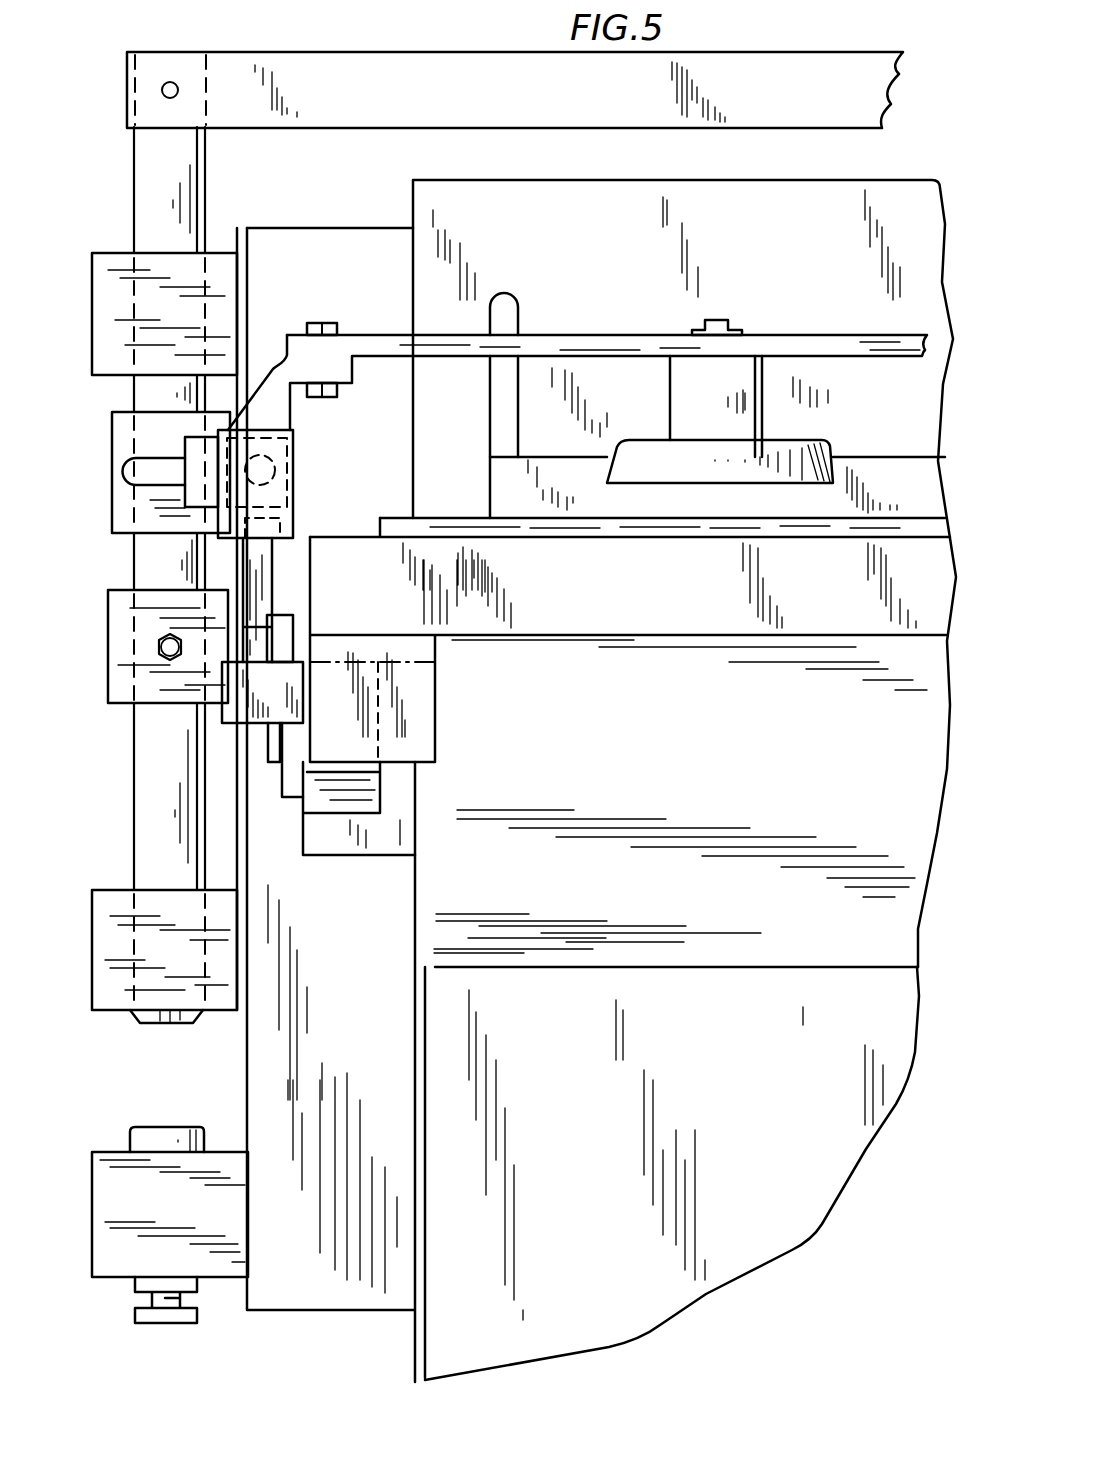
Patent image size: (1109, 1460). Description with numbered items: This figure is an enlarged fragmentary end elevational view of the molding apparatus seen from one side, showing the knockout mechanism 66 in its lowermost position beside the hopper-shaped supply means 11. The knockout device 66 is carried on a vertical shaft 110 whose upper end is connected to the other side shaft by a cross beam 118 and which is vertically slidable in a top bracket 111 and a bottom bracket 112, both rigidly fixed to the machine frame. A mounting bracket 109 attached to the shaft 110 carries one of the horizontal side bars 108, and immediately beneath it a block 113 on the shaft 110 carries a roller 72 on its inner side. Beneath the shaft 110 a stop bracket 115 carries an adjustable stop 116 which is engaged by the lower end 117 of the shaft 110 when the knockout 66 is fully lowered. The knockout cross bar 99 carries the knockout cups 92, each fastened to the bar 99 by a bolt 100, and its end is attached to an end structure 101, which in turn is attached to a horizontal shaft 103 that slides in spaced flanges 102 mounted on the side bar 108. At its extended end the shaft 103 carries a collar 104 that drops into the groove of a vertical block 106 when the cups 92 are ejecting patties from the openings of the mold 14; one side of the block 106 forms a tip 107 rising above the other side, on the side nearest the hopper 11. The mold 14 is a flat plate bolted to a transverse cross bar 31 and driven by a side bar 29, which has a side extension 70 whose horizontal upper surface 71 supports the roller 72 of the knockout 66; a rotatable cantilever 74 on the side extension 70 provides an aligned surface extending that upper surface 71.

The supply means 11 is at (903, 193).
The mold 14 is at (548, 526).
The side bar 29 is at (346, 804).
The transverse cross bar 31 is at (690, 590).
The knockout mechanism 66 is at (323, 312).
The side extension 70 is at (292, 798).
The horizontal upper surface 71 is at (298, 684).
The roller 72 is at (284, 614).
The rotatable cantilever 74 is at (268, 746).
The knockout cup 92 is at (822, 442).
The cross bar 99 is at (608, 335).
The bolt 100 is at (722, 318).
The end structure 101 is at (283, 407).
The spaced flanges 102 is at (300, 474).
The horizontal shaft 103 is at (292, 441).
The collar 104 is at (288, 502).
The vertical block 106 is at (266, 560).
The tip 107 is at (297, 521).
The side bar 108 is at (188, 442).
The mounting bracket 109 is at (120, 514).
The vertical shaft 110 is at (147, 180).
The top bracket 111 is at (222, 262).
The bottom bracket 112 is at (110, 893).
The block 113 is at (124, 704).
The stop bracket 115 is at (170, 1203).
The adjustable stop 116 is at (154, 1128).
The lower end 117 is at (166, 1026).
The cross beam 118 is at (576, 99).